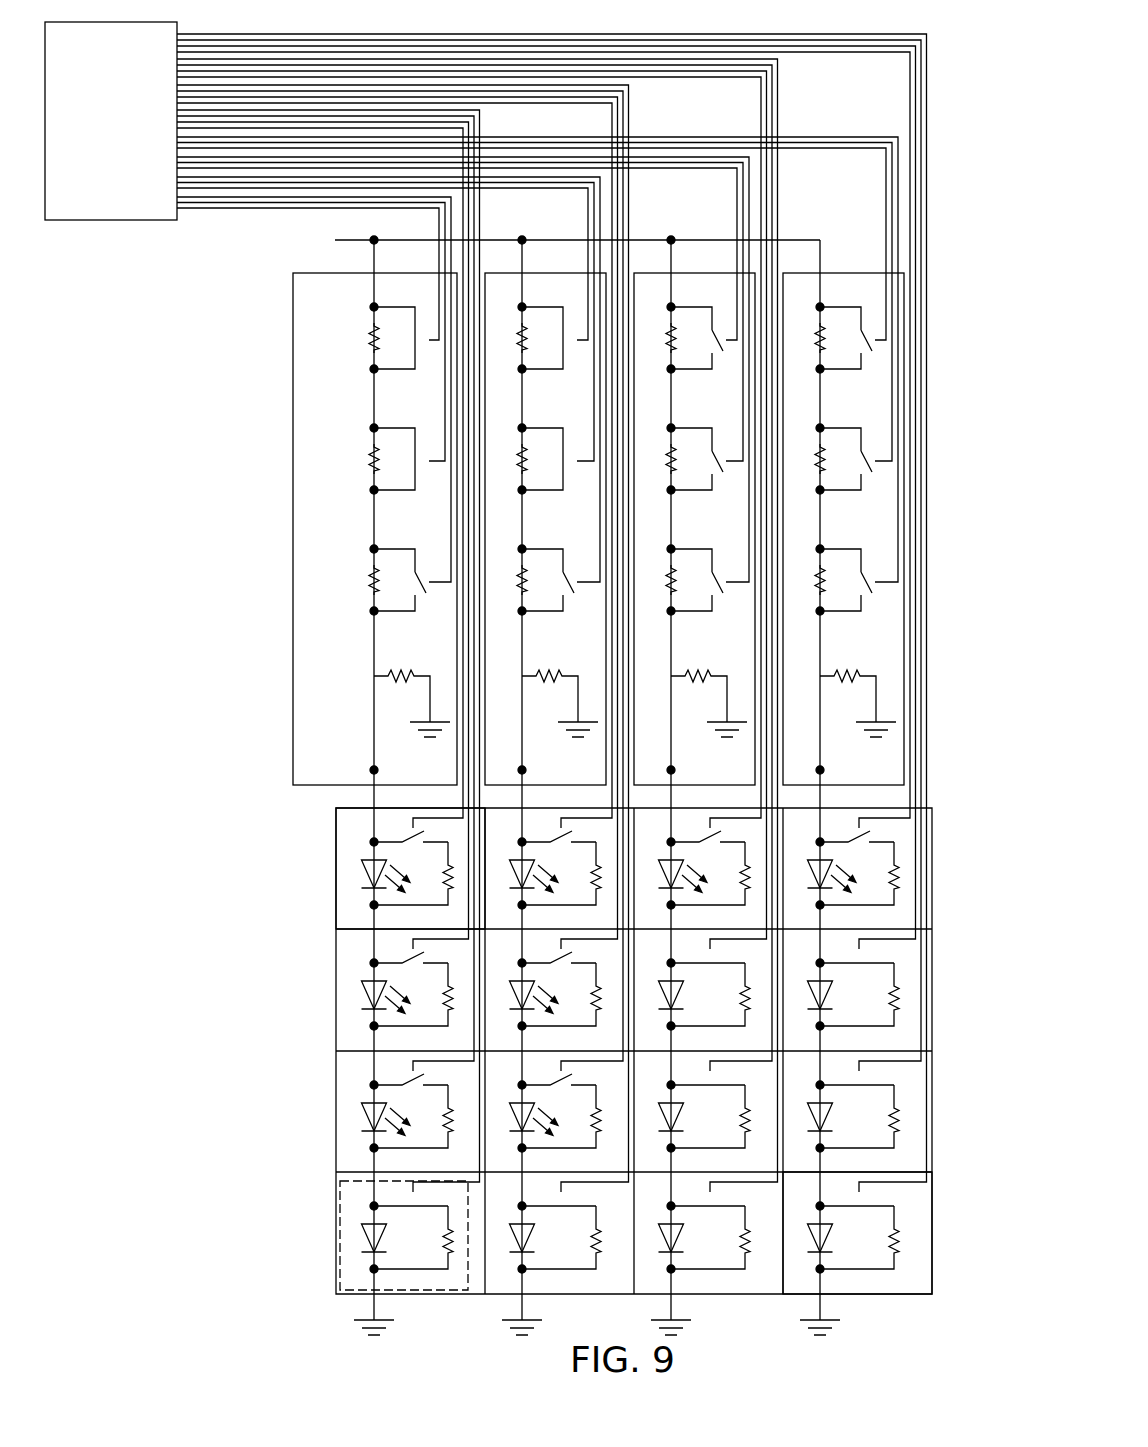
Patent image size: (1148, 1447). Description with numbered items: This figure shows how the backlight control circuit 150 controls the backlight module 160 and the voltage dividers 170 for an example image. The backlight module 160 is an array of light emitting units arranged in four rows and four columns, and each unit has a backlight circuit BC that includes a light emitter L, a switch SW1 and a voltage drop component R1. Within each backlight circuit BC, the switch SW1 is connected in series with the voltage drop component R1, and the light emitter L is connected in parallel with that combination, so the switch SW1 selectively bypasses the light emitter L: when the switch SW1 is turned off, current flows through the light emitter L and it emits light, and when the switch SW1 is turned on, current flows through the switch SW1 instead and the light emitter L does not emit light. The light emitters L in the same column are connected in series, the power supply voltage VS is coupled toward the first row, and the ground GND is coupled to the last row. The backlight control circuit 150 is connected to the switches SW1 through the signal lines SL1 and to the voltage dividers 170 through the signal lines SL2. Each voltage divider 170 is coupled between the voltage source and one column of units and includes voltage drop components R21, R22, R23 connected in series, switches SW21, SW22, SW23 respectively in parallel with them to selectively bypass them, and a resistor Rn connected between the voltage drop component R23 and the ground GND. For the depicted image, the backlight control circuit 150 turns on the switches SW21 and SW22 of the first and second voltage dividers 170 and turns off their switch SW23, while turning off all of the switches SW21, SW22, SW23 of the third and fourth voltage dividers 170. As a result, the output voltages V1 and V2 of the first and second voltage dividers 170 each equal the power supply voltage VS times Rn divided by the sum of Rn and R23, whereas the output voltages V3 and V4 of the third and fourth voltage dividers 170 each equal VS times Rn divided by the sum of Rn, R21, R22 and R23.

The backlight control circuit 150 is at (131, 183).
The signal lines SL1 is at (223, 34).
The signal lines SL2 is at (227, 209).
The power supply voltage VS is at (554, 240).
The voltage divider 170 is at (292, 480).
The switch SW21 is at (405, 328).
The switch SW22 is at (405, 449).
The switch SW23 is at (405, 570).
The voltage drop component R21 is at (343, 338).
The voltage drop component R22 is at (343, 459).
The voltage drop component R23 is at (343, 580).
The resistor Rn is at (412, 703).
The ground GND is at (618, 1059).
The voltage V1 is at (354, 770).
The voltage V2 is at (540, 770).
The voltage V3 is at (689, 770).
The voltage V4 is at (838, 770).
The backlight module 160 is at (298, 1152).
The switch SW1 is at (408, 1205).
The light emitter L is at (365, 1240).
The backlight circuit BC is at (340, 1257).
The voltage drop component R1 is at (458, 1252).